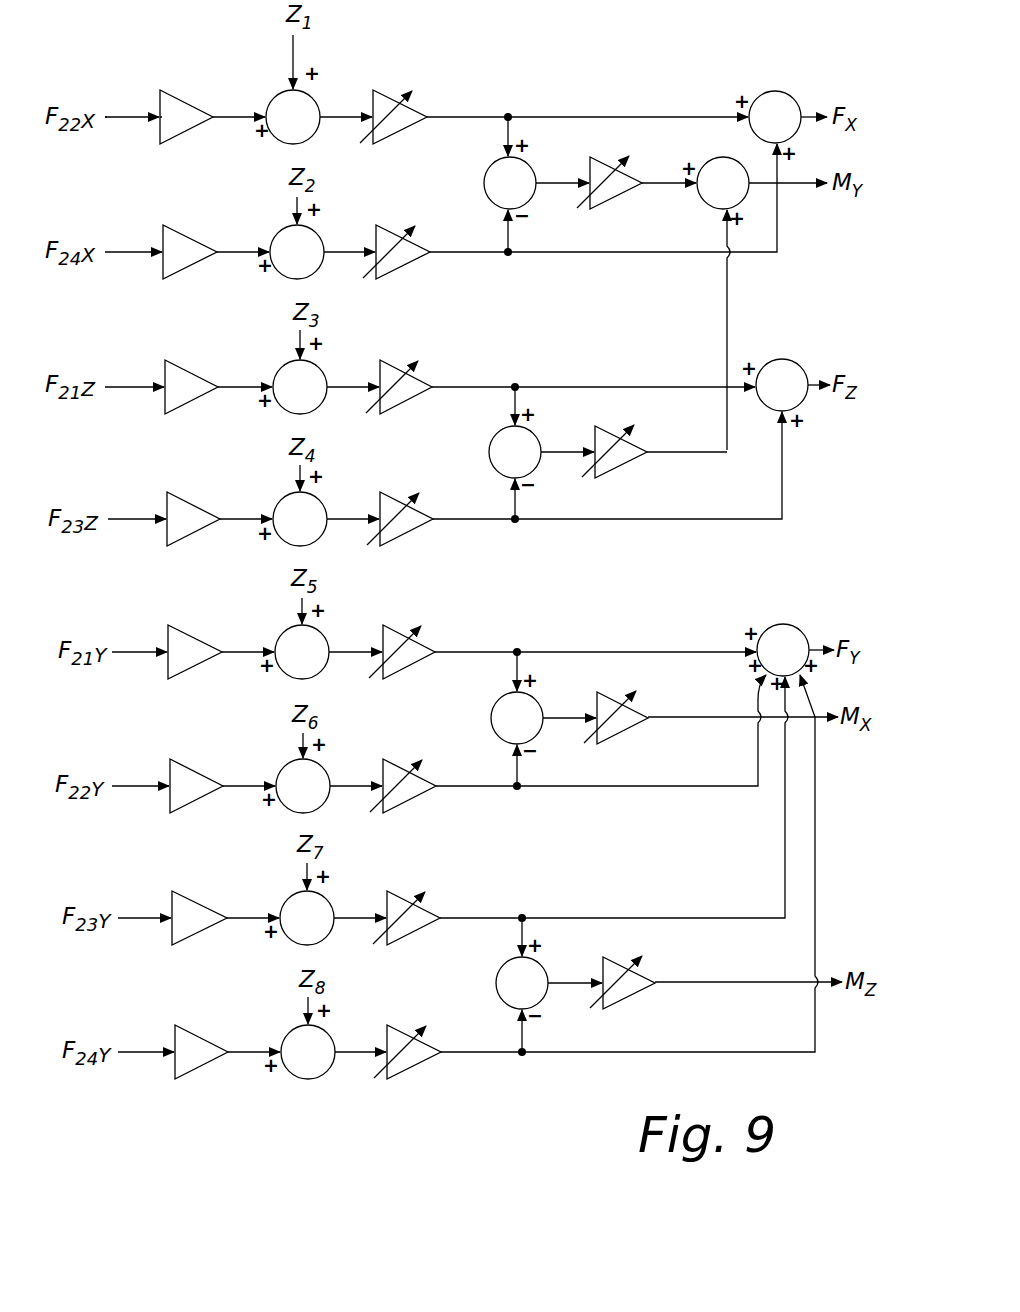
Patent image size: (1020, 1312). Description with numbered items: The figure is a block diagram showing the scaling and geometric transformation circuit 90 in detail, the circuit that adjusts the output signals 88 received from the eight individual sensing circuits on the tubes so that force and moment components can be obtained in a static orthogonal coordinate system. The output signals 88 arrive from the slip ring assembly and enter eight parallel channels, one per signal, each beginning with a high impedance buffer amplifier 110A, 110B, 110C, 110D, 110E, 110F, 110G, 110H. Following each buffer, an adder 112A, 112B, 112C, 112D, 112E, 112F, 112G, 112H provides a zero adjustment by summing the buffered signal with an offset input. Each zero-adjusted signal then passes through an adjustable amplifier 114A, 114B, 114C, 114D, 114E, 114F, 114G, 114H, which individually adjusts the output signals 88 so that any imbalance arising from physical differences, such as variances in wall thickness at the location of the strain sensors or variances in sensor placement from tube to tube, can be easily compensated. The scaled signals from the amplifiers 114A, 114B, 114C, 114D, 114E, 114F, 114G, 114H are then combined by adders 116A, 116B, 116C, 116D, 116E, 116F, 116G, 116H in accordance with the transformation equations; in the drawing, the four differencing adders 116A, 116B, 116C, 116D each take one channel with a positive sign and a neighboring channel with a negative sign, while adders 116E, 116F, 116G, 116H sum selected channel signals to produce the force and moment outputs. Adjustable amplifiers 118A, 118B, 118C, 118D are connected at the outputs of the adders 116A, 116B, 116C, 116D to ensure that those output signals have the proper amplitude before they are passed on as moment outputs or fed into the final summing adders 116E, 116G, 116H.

The output signals 88 is at (80, 100).
The scaling and geometric transformation circuit 90 is at (178, 95).
The high impedance buffer amplifier 110A is at (175, 145).
The high impedance buffer amplifier 110B is at (172, 230).
The high impedance buffer amplifier 110C is at (168, 366).
The high impedance buffer amplifier 110D is at (181, 539).
The high impedance buffer amplifier 110E is at (182, 672).
The high impedance buffer amplifier 110F is at (188, 806).
The high impedance buffer amplifier 110G is at (186, 938).
The high impedance buffer amplifier 110H is at (188, 1073).
The adder 112A is at (315, 98).
The adder 112B is at (316, 232).
The adder 112C is at (318, 366).
The adder 112D is at (320, 498).
The adder 112E is at (303, 679).
The adder 112F is at (322, 766).
The adder 112G is at (328, 898).
The adder 112H is at (306, 1080).
The adjustable amplifier 114A is at (398, 128).
The adjustable amplifier 114B is at (406, 263).
The adjustable amplifier 114C is at (398, 398).
The adjustable amplifier 114D is at (408, 532).
The adjustable amplifier 114E is at (401, 666).
The adjustable amplifier 114F is at (412, 798).
The adjustable amplifier 114G is at (412, 930).
The adjustable amplifier 114H is at (422, 1066).
The adder 116A is at (484, 183).
The adder 116B is at (489, 462).
The adder 116C is at (491, 728).
The adder 116D is at (496, 993).
The adder 116E is at (710, 158).
The adder 116F is at (780, 91).
The adder 116G is at (792, 336).
The adder 116H is at (770, 624).
The adjustable amplifier 118A is at (600, 160).
The adjustable amplifier 118B is at (602, 426).
The adjustable amplifier 118C is at (606, 692).
The adjustable amplifier 118D is at (612, 958).